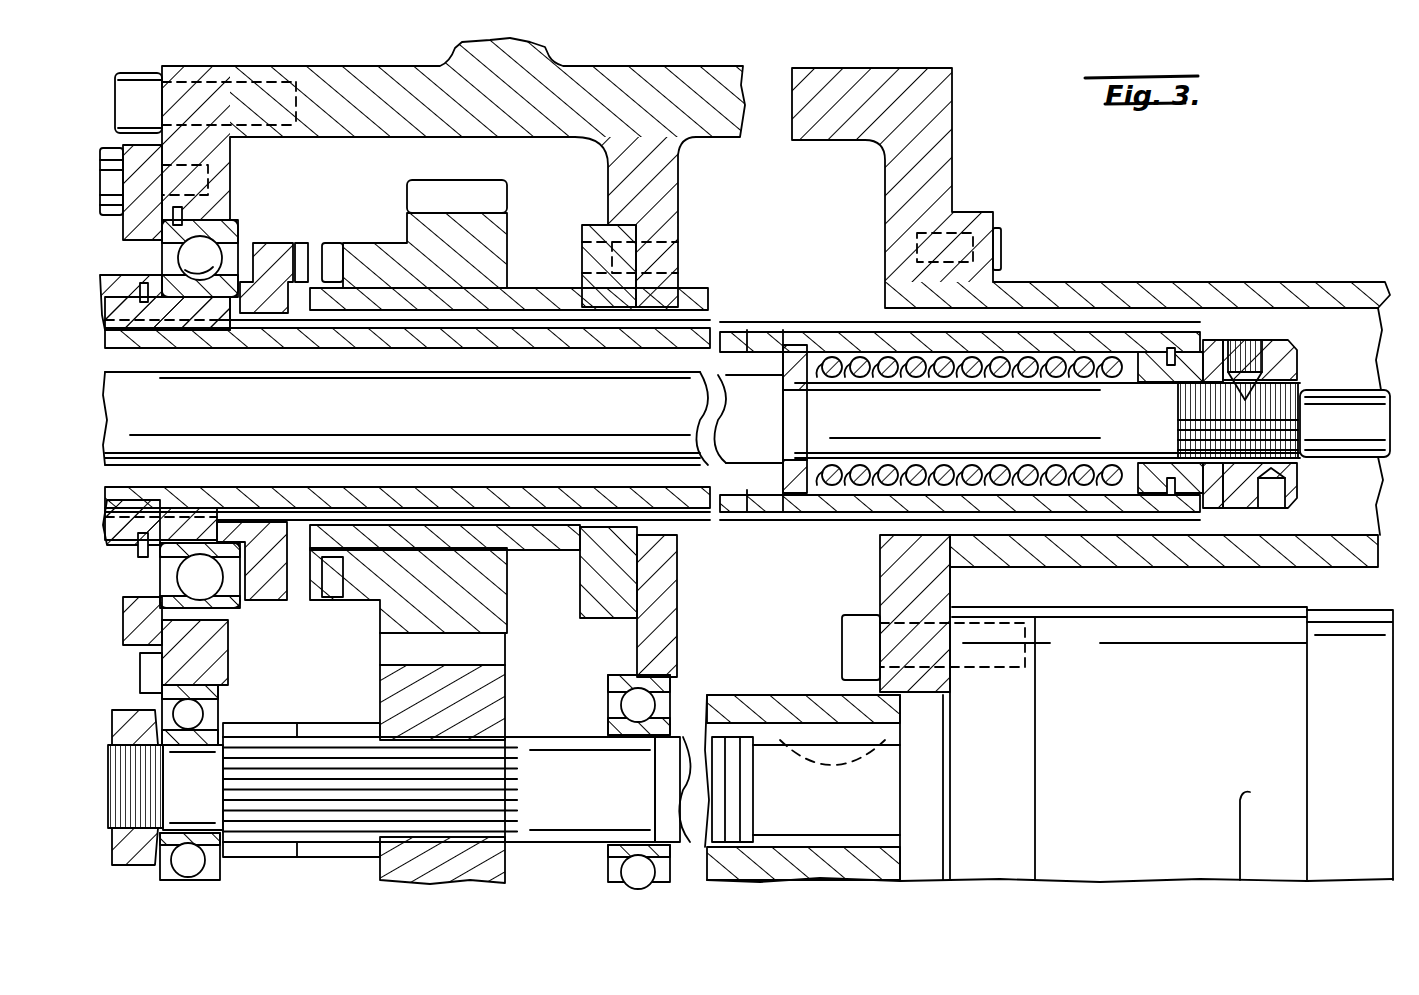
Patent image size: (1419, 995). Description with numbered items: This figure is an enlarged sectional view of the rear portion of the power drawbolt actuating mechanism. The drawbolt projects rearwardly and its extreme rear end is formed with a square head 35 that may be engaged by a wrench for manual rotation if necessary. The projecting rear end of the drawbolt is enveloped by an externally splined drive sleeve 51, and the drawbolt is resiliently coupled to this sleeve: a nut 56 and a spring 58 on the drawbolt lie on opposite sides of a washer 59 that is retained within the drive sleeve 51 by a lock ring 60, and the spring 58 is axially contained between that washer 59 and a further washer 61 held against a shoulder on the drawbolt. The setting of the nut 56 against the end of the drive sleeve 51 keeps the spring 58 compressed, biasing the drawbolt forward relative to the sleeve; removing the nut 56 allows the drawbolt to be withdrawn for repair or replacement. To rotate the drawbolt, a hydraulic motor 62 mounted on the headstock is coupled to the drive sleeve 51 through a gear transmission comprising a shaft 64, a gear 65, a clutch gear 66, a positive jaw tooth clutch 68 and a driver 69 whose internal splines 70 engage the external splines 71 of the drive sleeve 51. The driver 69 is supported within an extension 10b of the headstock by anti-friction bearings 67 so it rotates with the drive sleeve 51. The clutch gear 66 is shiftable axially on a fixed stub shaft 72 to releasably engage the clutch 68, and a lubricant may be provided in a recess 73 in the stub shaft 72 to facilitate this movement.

The extension of the headstock 10b is at (312, 75).
The square head 35 is at (1335, 405).
The drive sleeve 51 is at (987, 337).
The nut 56 is at (1290, 352).
The spring 58 is at (1060, 343).
The washer 59 is at (1150, 352).
The lock ring 60 is at (1200, 340).
The washer 61 is at (790, 342).
The hydraulic motor 62 is at (1160, 627).
The shaft 64 is at (568, 750).
The gear 65 is at (495, 703).
The clutch gear 66 is at (505, 232).
The anti-friction bearings 67 is at (228, 230).
The positive jaw tooth clutch 68 is at (321, 246).
The driver 69 is at (263, 253).
The internal splines 70 is at (168, 330).
The external splines 71 is at (252, 330).
The fixed stub shaft 72 is at (545, 300).
The recess 73 is at (410, 312).